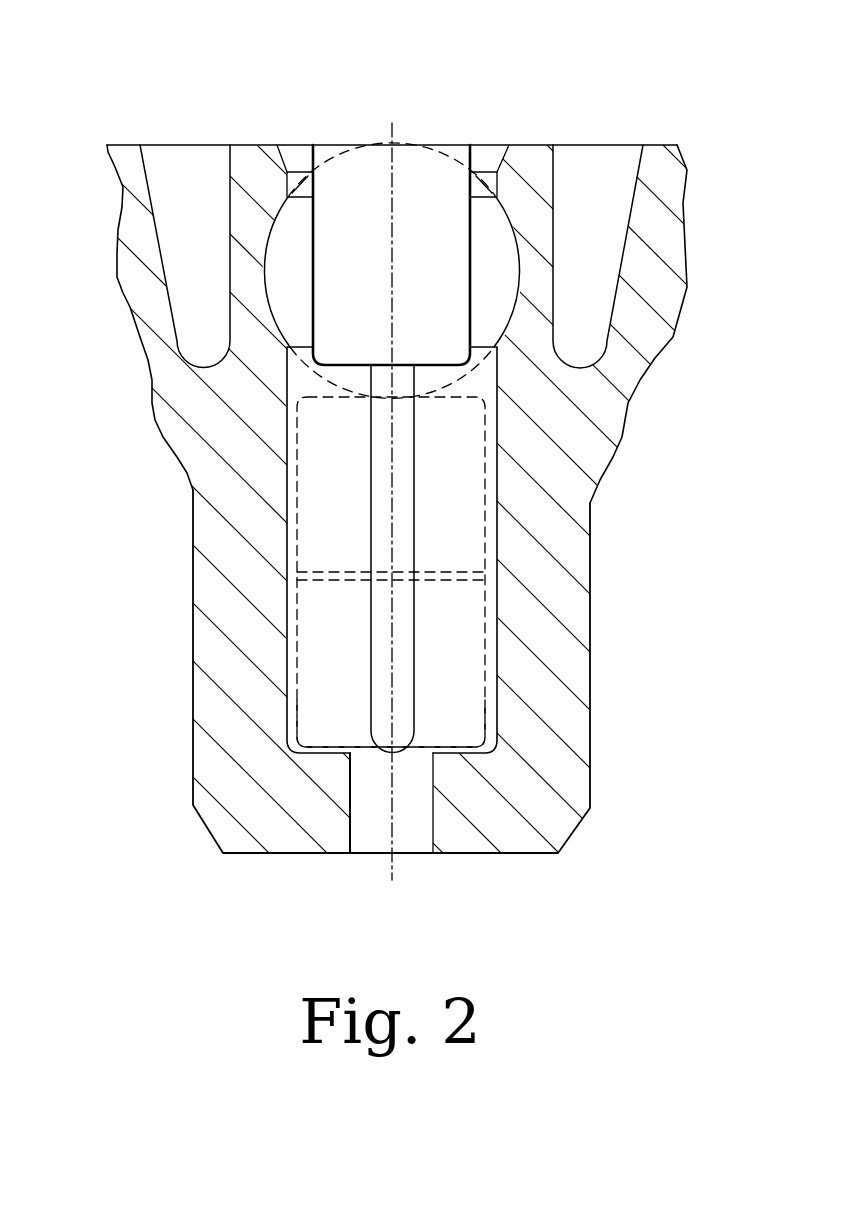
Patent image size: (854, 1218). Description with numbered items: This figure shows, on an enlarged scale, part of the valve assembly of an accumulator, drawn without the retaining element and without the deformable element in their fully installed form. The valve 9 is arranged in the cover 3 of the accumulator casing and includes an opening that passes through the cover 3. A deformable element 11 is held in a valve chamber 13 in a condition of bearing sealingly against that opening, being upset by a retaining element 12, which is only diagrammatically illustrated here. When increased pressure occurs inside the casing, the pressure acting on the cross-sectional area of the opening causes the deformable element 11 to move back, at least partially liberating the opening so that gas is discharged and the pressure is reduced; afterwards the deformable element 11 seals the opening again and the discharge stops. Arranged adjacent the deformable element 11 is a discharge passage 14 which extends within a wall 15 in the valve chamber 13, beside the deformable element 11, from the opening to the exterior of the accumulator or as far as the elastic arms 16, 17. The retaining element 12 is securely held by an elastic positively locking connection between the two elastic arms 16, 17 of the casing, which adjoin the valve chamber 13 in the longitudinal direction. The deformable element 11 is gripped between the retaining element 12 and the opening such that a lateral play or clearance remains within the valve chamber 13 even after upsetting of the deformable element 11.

The cover 3 is at (137, 228).
The valve 9 is at (185, 734).
The deformable element 11 is at (472, 705).
The retaining element 12 is at (438, 162).
The valve chamber 13 is at (208, 636).
The discharge passage 14 is at (382, 475).
The wall 15 is at (470, 528).
The elastic arm 16 is at (260, 162).
The elastic arm 17 is at (530, 162).